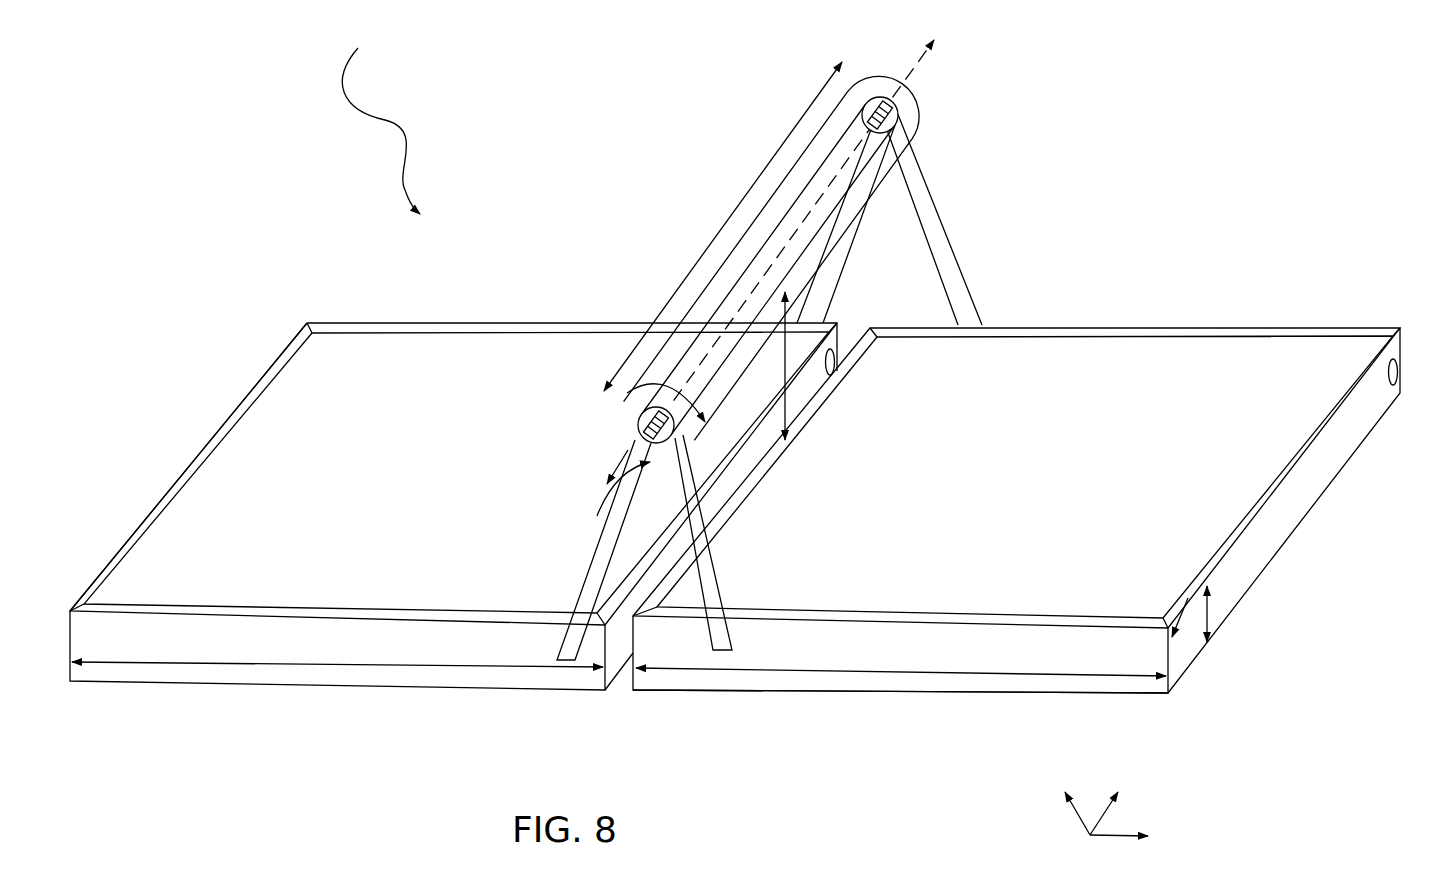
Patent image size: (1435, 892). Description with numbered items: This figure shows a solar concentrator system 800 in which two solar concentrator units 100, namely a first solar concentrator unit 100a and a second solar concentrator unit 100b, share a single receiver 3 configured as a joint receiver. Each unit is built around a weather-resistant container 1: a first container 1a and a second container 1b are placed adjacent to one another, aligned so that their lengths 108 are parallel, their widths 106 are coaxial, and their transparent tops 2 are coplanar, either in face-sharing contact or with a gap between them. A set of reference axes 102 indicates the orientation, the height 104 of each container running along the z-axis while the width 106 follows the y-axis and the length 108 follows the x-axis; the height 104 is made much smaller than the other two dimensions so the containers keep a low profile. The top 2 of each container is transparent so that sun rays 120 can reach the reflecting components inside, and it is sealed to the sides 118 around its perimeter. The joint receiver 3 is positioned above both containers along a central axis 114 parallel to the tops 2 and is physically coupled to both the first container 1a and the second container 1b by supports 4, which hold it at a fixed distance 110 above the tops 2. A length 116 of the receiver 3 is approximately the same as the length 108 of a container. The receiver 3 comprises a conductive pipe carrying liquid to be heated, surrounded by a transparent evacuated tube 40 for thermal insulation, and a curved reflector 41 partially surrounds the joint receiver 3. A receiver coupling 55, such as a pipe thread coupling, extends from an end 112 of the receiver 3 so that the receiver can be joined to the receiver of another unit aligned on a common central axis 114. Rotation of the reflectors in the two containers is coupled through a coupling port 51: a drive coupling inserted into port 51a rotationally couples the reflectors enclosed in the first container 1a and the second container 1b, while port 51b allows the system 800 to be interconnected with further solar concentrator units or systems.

The solar concentrator system 800 is at (150, 54).
The sun rays 120 is at (355, 131).
The solar concentrator unit 100 is at (140, 251).
The first solar concentrator unit 100a is at (352, 296).
The second solar concentrator unit 100b is at (1090, 295).
The container 1 is at (178, 356).
The first container 1a is at (275, 371).
The second container 1b is at (1240, 324).
The top 2 is at (282, 531).
The receiver 3 is at (790, 236).
The supports 4 is at (711, 552).
The evacuated tube 40 is at (796, 196).
The curved reflector 41 is at (925, 128).
The coupling port 51 is at (1350, 191).
The port 51a is at (837, 352).
The port 51b is at (1392, 362).
The receiver coupling 55 is at (640, 437).
The reference axes 102 is at (104, 573).
The height 104 is at (1209, 621).
The width 106 is at (190, 665).
The length 108 is at (1303, 468).
The distance 110 is at (787, 408).
The end 112 is at (602, 489).
The central axis 114 is at (917, 44).
The length 116 is at (811, 104).
The sides 118 is at (343, 633).